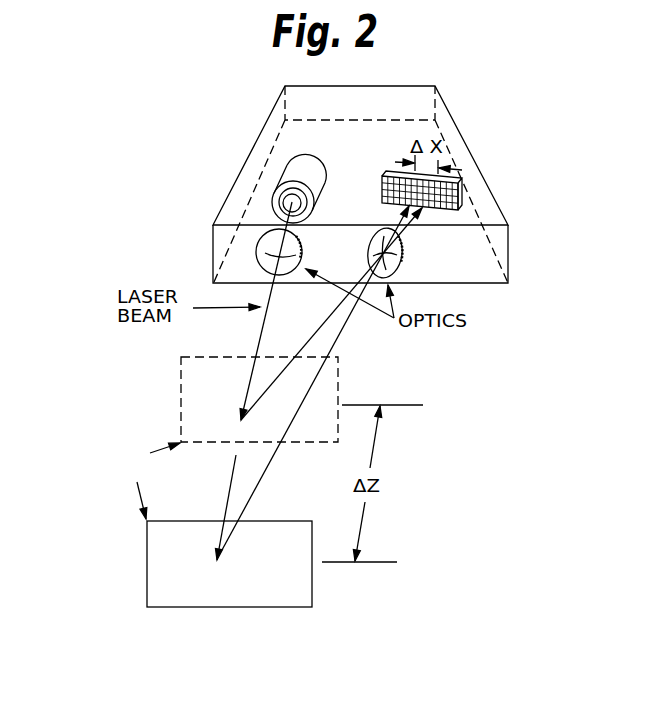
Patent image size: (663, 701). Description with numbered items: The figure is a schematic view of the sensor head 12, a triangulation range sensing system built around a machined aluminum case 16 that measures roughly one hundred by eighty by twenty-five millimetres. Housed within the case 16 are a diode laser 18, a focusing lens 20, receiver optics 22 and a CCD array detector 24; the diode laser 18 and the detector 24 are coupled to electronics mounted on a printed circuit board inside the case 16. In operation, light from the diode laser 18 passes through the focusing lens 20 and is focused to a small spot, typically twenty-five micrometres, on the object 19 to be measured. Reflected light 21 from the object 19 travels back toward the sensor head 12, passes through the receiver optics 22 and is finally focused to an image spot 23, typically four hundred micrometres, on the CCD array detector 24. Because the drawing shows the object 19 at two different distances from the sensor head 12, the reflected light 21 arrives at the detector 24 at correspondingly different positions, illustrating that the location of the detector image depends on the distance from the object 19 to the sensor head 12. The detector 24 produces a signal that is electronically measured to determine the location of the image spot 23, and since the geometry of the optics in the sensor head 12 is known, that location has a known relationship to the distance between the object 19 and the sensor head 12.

The sensor head 12 is at (522, 200).
The case 16 is at (476, 286).
The diode laser 18 is at (267, 187).
The object 19 is at (150, 563).
The focusing lens 20 is at (262, 250).
The reflected light 21 is at (307, 402).
The receiver optics 22 is at (404, 256).
The image spot 23 is at (427, 170).
The CCD array detector 24 is at (457, 193).